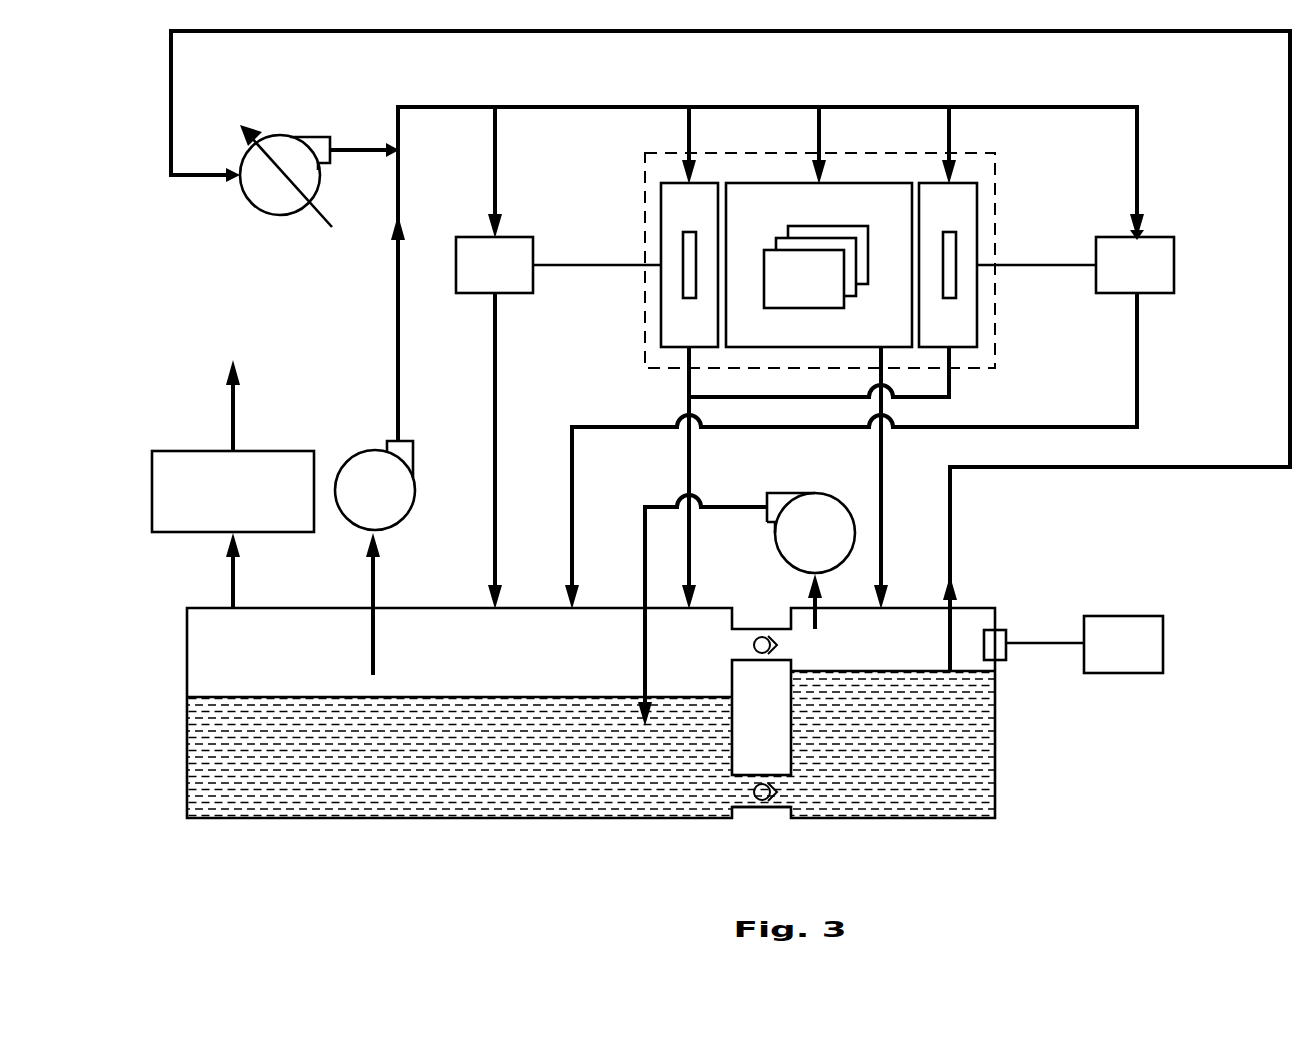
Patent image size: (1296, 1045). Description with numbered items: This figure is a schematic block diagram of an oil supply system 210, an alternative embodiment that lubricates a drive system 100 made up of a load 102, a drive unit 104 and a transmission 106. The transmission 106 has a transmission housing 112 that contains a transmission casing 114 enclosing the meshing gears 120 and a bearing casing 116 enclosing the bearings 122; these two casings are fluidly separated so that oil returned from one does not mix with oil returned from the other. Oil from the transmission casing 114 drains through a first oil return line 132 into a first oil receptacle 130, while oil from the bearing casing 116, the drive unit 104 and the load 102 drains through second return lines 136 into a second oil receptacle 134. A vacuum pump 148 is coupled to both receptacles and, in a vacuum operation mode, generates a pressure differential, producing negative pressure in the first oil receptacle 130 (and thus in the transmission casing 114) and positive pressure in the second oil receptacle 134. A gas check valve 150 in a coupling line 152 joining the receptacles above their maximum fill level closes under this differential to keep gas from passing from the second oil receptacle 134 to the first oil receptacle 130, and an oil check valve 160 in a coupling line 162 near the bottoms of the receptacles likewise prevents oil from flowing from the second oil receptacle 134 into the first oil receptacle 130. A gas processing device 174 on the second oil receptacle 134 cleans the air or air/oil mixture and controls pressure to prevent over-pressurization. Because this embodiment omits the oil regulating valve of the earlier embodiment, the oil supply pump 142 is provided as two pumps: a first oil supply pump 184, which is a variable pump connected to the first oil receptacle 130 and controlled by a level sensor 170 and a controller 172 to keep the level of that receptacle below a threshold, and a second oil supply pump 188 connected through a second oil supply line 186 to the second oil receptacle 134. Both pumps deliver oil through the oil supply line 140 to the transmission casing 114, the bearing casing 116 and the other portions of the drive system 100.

The drive system 100 is at (1176, 257).
The load 102 is at (1113, 279).
The drive unit 104 is at (473, 279).
The transmission 106 is at (814, 239).
The transmission housing 112 is at (848, 153).
The transmission casing 114 is at (795, 183).
The bearing casing 116 is at (672, 183).
The meshing gears 120 is at (783, 292).
The bearings 122 is at (683, 258).
The first oil receptacle 130 is at (591, 753).
The first oil return line 132 is at (883, 485).
The second oil receptacle 134 is at (497, 820).
The second return line 136 is at (1137, 383).
The oil supply line 140 is at (171, 112).
The oil supply pump 142 is at (305, 400).
The vacuum pump 148 is at (803, 517).
The gas check valve 150 is at (753, 643).
The coupling line 152 is at (758, 660).
The oil check valve 160 is at (758, 800).
The coupling line 162 is at (778, 810).
The level sensor 170 is at (1006, 632).
The controller 172 is at (1101, 658).
The gas processing device 174 is at (211, 505).
The first oil supply pump 184 is at (283, 216).
The second oil supply line 186 is at (372, 580).
The second oil supply pump 188 is at (405, 488).
The oil supply system 210 is at (194, 457).